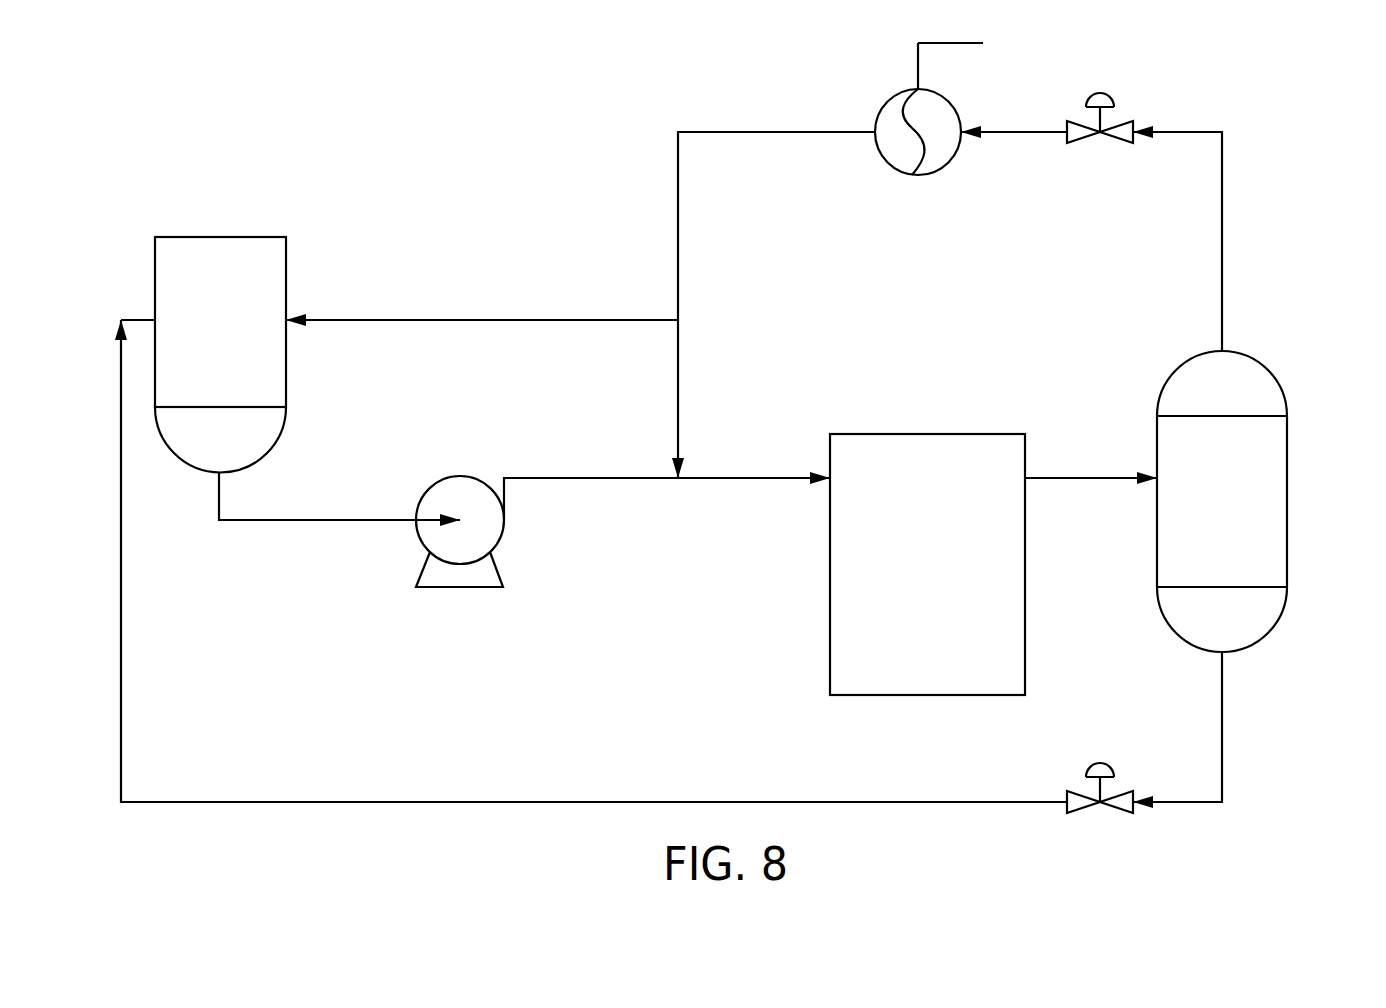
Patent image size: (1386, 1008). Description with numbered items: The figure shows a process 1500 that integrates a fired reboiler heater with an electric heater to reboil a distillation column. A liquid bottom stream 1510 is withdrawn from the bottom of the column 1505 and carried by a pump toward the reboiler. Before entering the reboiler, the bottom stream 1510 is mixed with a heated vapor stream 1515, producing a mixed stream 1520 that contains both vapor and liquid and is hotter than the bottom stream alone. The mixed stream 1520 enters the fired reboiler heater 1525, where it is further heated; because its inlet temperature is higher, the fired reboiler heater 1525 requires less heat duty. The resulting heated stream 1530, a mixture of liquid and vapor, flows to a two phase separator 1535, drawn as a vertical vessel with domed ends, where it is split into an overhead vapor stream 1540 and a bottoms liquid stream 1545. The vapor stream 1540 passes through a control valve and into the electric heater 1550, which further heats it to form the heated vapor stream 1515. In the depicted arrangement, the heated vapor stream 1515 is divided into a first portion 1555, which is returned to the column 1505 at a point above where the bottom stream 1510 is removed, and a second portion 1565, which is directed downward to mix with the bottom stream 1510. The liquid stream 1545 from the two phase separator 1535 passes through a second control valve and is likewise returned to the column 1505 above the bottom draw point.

The process 1500 is at (500, 104).
The column 1505 is at (265, 237).
The bottom stream 1510 is at (220, 495).
The heated vapor stream 1515 is at (679, 285).
The mixed stream 1520 is at (776, 476).
The fired reboiler heater 1525 is at (929, 434).
The heated stream 1530 is at (1092, 476).
The two phase separator 1535 is at (1268, 366).
The vapor stream 1540 is at (1223, 240).
The liquid stream 1545 is at (1223, 724).
The electric heater 1550 is at (897, 95).
The first portion 1555 is at (519, 318).
The second portion 1565 is at (679, 358).